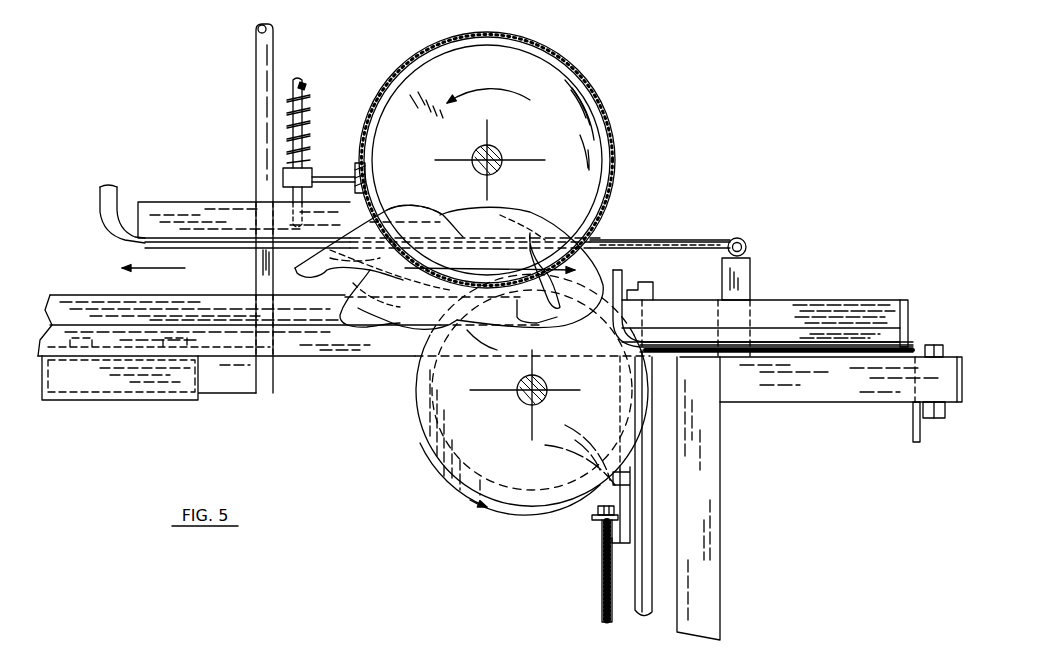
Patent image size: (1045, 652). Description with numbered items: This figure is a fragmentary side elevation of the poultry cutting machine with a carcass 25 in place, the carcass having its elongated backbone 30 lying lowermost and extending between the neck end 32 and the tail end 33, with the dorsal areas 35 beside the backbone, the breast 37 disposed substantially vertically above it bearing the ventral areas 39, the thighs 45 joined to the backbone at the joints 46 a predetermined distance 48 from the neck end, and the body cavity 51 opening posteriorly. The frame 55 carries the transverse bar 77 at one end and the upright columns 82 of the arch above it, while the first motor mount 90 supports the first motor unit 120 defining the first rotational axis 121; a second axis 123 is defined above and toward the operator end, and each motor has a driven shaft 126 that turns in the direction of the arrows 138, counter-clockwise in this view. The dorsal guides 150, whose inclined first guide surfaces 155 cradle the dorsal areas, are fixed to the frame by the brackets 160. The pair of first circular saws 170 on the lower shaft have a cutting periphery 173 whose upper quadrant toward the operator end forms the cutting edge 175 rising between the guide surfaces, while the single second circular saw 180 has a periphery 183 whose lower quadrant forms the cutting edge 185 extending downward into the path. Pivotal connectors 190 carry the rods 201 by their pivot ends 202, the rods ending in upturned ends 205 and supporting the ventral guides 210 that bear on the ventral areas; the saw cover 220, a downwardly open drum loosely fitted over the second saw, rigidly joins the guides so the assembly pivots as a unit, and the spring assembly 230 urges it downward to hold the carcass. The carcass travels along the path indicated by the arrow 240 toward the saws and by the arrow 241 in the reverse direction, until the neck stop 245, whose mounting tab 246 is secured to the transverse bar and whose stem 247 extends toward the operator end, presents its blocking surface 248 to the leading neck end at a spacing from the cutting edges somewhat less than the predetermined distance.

The poultry carcass 25 is at (632, 242).
The backbone 30 is at (392, 350).
The neck end 32 is at (616, 266).
The tail end 33 is at (345, 318).
The dorsal areas 35 is at (522, 343).
The breast 37 is at (510, 210).
The ventral areas 39 is at (557, 232).
The thighs 45 is at (392, 205).
The joints 46 is at (363, 337).
The predetermined distance 48 is at (496, 373).
The body cavity 51 is at (372, 222).
The frame 55 is at (725, 517).
The horizontal transverse bar 77 is at (936, 420).
The upright columns 82 is at (256, 112).
The first motor mount 90 is at (598, 590).
The first motor unit 120 is at (428, 415).
The first rotational axis 121 is at (552, 420).
The second rotational axis 123 is at (490, 134).
The rotationally driven shaft 126 is at (475, 151).
The arrows 138 is at (480, 92).
The dorsal guides 150 is at (800, 295).
The first guide surfaces 155 is at (867, 313).
The brackets 160 is at (918, 307).
The first circular saws 170 is at (562, 458).
The circular cutting periphery 173 is at (505, 497).
The cutting edge 175 is at (662, 314).
The second circular saw 180 is at (568, 123).
The circular cutting periphery 183 is at (597, 150).
The cutting edge 185 is at (612, 240).
The pivotal connectors 190 is at (752, 256).
The rods 201 is at (175, 235).
The pivot end 202 is at (746, 243).
The upturned end 205 is at (110, 192).
The ventral guides 210 is at (160, 210).
The saw cover 220 is at (573, 75).
The spring assembly 230 is at (313, 83).
The arrow 240 is at (345, 258).
The arrow 241 is at (183, 267).
The neck stop 245 is at (835, 343).
The mounting tab 246 is at (930, 345).
The stem 247 is at (833, 352).
The blocking surface 248 is at (624, 273).